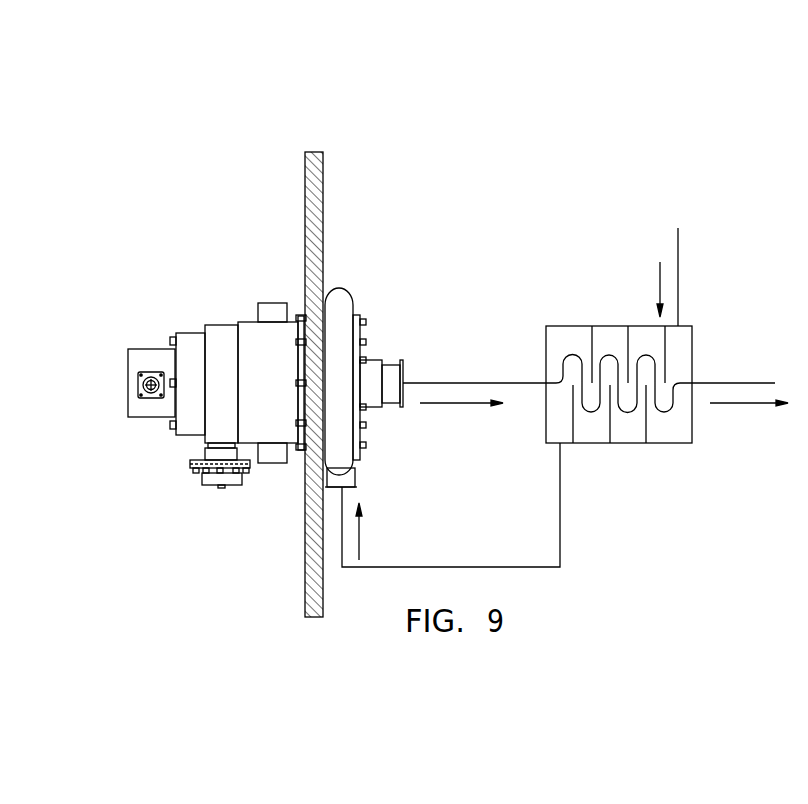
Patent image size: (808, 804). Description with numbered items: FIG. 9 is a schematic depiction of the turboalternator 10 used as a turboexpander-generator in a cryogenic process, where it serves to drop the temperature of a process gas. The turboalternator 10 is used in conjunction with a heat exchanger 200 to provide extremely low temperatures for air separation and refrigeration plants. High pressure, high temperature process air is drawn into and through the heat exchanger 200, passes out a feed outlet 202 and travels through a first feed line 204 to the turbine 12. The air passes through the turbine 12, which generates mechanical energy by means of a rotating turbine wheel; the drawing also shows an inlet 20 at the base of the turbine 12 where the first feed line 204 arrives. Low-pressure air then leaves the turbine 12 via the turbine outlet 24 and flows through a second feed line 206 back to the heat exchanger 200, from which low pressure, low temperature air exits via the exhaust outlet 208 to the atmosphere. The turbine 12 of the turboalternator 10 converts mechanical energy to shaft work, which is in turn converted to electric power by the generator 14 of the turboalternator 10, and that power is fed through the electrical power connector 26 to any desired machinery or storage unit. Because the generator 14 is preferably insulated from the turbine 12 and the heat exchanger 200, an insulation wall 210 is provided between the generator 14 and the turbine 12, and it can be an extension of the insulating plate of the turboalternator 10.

The turboalternator 10 is at (214, 292).
The turbine 12 is at (343, 303).
The generator 14 is at (218, 423).
The inlet 20 is at (352, 489).
The turbine outlet 24 is at (402, 398).
The electrical power connector 26 is at (222, 487).
The heat exchanger 200 is at (641, 312).
The feed outlet 202 is at (552, 431).
The first feed line 204 is at (448, 567).
The second feed line 206 is at (447, 383).
The exhaust outlet 208 is at (711, 383).
The insulation wall 210 is at (323, 212).